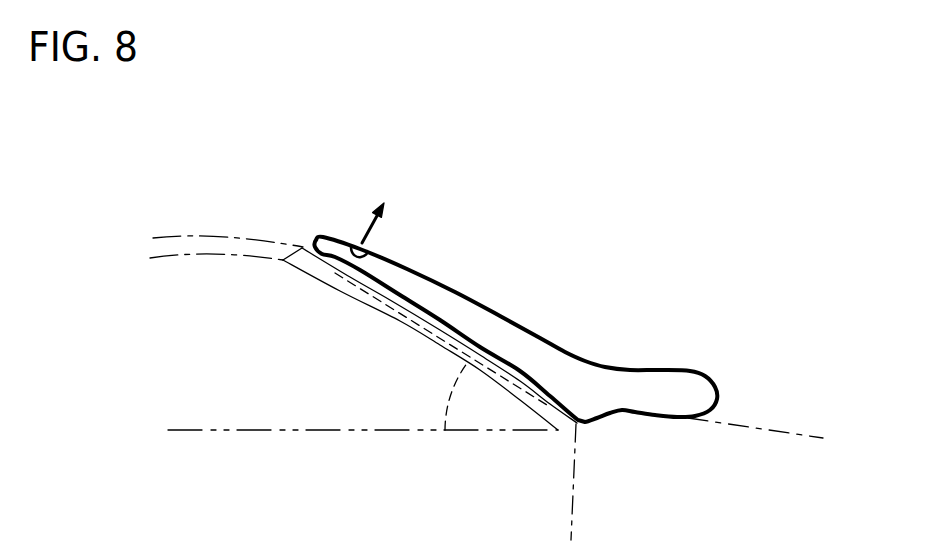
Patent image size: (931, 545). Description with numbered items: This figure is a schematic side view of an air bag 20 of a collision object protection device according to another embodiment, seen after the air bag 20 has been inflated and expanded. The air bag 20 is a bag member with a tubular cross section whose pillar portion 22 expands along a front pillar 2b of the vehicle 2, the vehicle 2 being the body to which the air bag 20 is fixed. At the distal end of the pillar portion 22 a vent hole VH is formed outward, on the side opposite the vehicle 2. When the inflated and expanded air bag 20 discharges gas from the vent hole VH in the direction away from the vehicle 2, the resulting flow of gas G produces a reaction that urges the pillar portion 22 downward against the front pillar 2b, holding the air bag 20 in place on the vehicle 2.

The vehicle 2 is at (214, 229).
The front pillar 2b is at (357, 292).
The air bag 20 is at (516, 263).
The pillar portion 22 is at (462, 294).
The vent hole VH is at (349, 233).
The flow of gas G is at (371, 226).